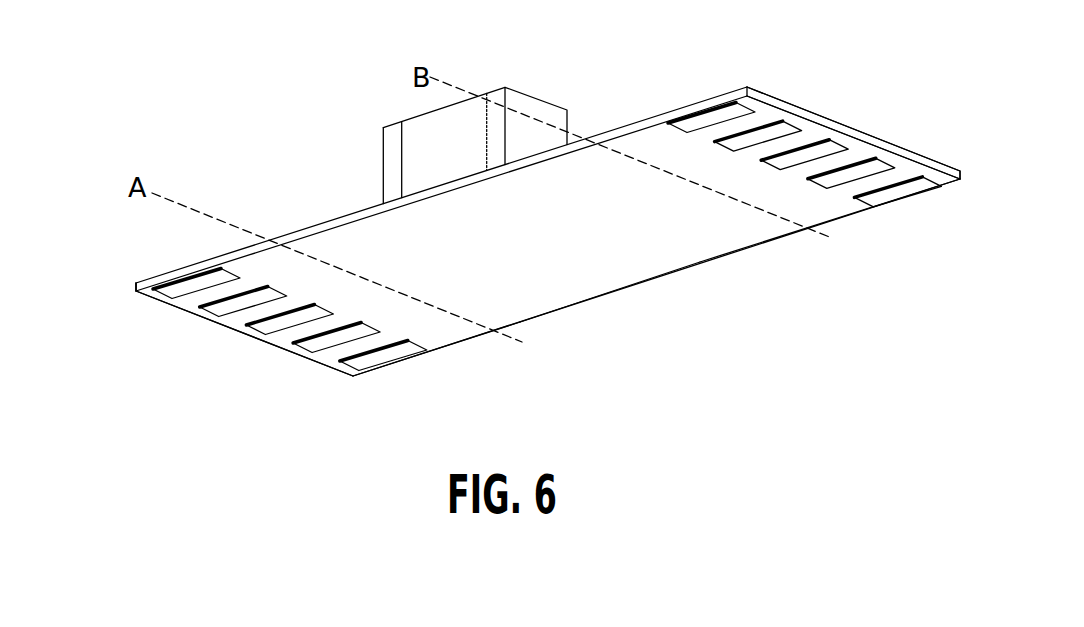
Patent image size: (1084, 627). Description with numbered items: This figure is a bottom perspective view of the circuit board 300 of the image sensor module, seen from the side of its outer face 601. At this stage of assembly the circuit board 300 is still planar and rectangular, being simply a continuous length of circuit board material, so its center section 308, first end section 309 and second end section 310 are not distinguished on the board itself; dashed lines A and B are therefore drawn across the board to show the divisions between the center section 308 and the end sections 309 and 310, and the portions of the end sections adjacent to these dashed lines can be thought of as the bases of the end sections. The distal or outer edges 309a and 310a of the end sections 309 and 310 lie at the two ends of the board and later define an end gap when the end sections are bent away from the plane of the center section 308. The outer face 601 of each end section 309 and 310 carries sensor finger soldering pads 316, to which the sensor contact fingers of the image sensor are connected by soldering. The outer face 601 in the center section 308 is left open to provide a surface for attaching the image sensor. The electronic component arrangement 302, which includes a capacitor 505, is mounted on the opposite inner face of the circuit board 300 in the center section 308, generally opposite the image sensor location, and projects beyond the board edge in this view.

The circuit board 300 is at (656, 90).
The electronic component arrangement 302 is at (421, 137).
The capacitor 505 is at (383, 167).
The soldering pads 316 is at (740, 118).
The distal edge of first end section 309a is at (872, 143).
The first end section 309 is at (835, 205).
The center section 308 is at (632, 268).
The second end section 310 is at (455, 327).
The distal edge of second end section 310a is at (137, 287).
The outer face of circuit board 601 is at (567, 259).